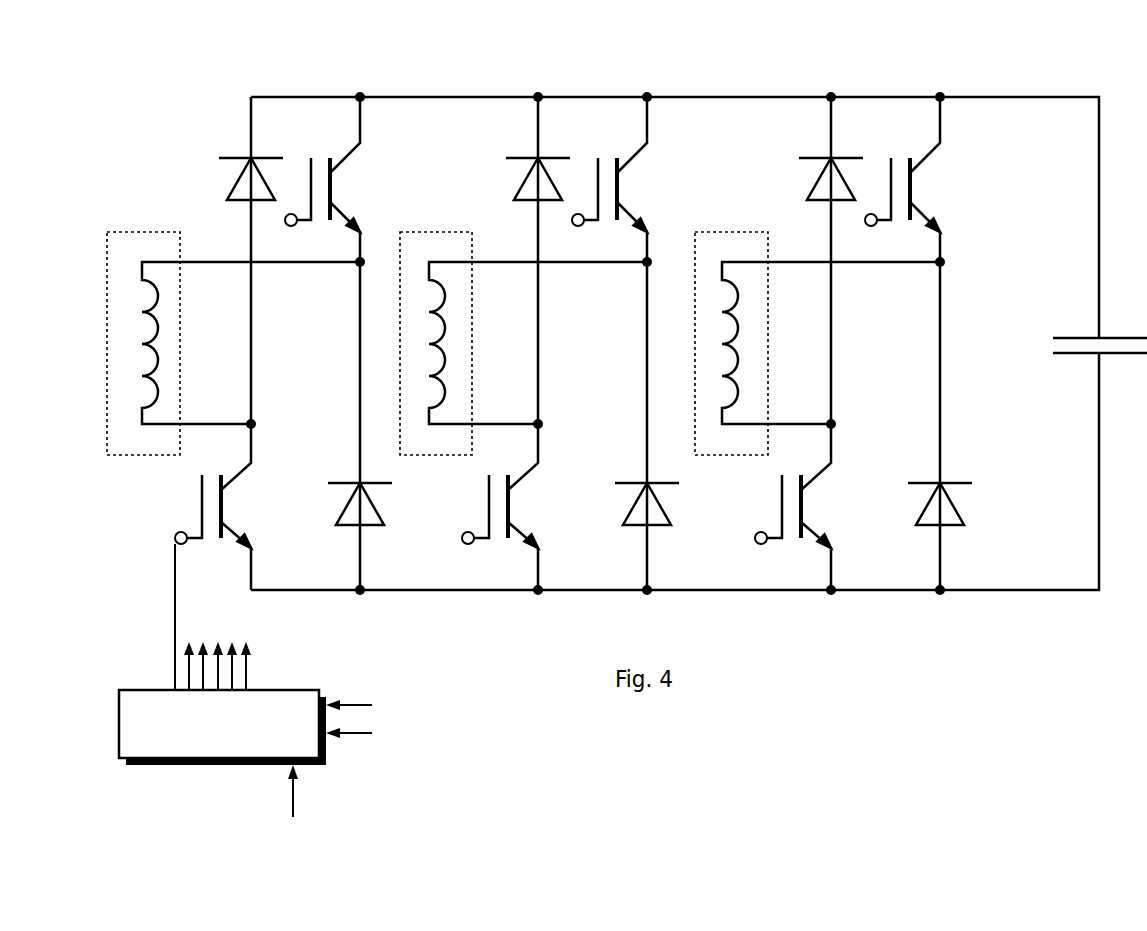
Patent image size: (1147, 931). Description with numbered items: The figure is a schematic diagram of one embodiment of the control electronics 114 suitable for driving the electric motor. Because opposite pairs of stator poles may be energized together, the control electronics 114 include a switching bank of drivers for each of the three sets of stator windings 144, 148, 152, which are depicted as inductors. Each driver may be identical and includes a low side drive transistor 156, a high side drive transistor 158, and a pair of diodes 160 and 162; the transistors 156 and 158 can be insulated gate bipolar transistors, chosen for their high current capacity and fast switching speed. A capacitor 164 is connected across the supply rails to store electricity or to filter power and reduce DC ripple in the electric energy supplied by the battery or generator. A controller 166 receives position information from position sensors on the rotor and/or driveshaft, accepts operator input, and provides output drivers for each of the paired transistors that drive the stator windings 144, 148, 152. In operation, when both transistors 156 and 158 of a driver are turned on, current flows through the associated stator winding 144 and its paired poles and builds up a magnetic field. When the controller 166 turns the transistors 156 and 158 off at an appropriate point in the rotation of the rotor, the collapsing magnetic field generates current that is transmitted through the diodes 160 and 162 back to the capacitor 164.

The control electronics 114 is at (653, 52).
The stator winding 144 is at (150, 231).
The stator winding 148 is at (460, 229).
The stator winding 152 is at (753, 231).
The low side drive transistor 156 is at (200, 515).
The high side drive transistor 158 is at (345, 152).
The diode 160 is at (228, 190).
The diode 162 is at (337, 520).
The capacitor 164 is at (1080, 335).
The controller 166 is at (119, 727).